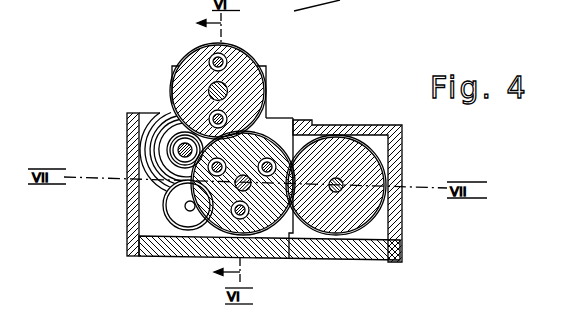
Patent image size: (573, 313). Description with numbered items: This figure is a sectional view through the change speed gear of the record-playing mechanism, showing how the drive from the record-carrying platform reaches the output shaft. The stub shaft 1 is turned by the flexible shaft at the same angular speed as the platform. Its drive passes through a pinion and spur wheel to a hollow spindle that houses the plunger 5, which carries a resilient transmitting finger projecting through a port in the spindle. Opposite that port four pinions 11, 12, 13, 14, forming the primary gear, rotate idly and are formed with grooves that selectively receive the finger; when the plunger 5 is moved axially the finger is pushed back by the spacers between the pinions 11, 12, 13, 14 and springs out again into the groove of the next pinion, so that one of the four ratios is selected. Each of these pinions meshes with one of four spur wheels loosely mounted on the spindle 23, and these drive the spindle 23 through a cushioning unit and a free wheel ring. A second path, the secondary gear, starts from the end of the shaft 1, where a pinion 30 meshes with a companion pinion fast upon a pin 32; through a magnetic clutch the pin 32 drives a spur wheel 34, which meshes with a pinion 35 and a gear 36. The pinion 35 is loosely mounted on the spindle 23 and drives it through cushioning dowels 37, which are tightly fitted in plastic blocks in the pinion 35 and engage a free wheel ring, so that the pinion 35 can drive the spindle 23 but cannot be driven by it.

The stub shaft 1 is at (190, 208).
The plunger 5 is at (126, 190).
The pinion 11 is at (173, 153).
The pinion 12 is at (168, 149).
The pinion 13 is at (158, 117).
The pinion 14 is at (143, 119).
The spindle 23 is at (213, 102).
The pinion 30 is at (172, 203).
The pin 32 is at (272, 227).
The spur wheel 34 is at (268, 140).
The pinion 35 is at (253, 67).
The gear 36 is at (350, 140).
The dowels 37 is at (229, 57).